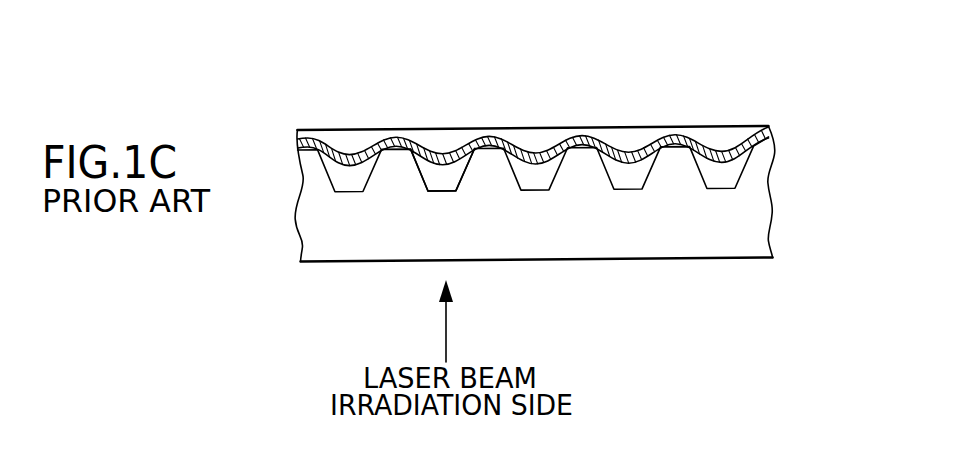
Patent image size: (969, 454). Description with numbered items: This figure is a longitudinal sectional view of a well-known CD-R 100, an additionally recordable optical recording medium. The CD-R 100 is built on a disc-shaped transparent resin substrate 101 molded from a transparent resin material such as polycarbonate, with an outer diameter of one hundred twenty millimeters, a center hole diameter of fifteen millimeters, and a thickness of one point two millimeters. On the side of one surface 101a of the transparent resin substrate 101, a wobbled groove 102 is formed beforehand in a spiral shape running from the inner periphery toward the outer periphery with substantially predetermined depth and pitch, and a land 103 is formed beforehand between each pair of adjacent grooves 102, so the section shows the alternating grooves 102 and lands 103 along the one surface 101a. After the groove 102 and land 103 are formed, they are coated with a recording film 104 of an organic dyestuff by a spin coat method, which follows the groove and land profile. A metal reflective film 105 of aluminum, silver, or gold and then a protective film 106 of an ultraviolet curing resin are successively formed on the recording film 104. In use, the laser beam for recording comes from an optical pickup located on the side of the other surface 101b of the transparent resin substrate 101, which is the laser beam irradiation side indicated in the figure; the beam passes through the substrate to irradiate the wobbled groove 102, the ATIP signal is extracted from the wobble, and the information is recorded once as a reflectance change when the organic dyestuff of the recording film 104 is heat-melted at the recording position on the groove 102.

The CD-R 100 is at (288, 216).
The transparent resin substrate 101 is at (330, 240).
The one surface 101a is at (672, 126).
The another surface 101b is at (722, 258).
The wobbled groove 102 is at (445, 193).
The land 103 is at (496, 142).
The recording film 104 is at (450, 176).
The metal reflective film 105 is at (392, 140).
The protective film 106 is at (443, 140).